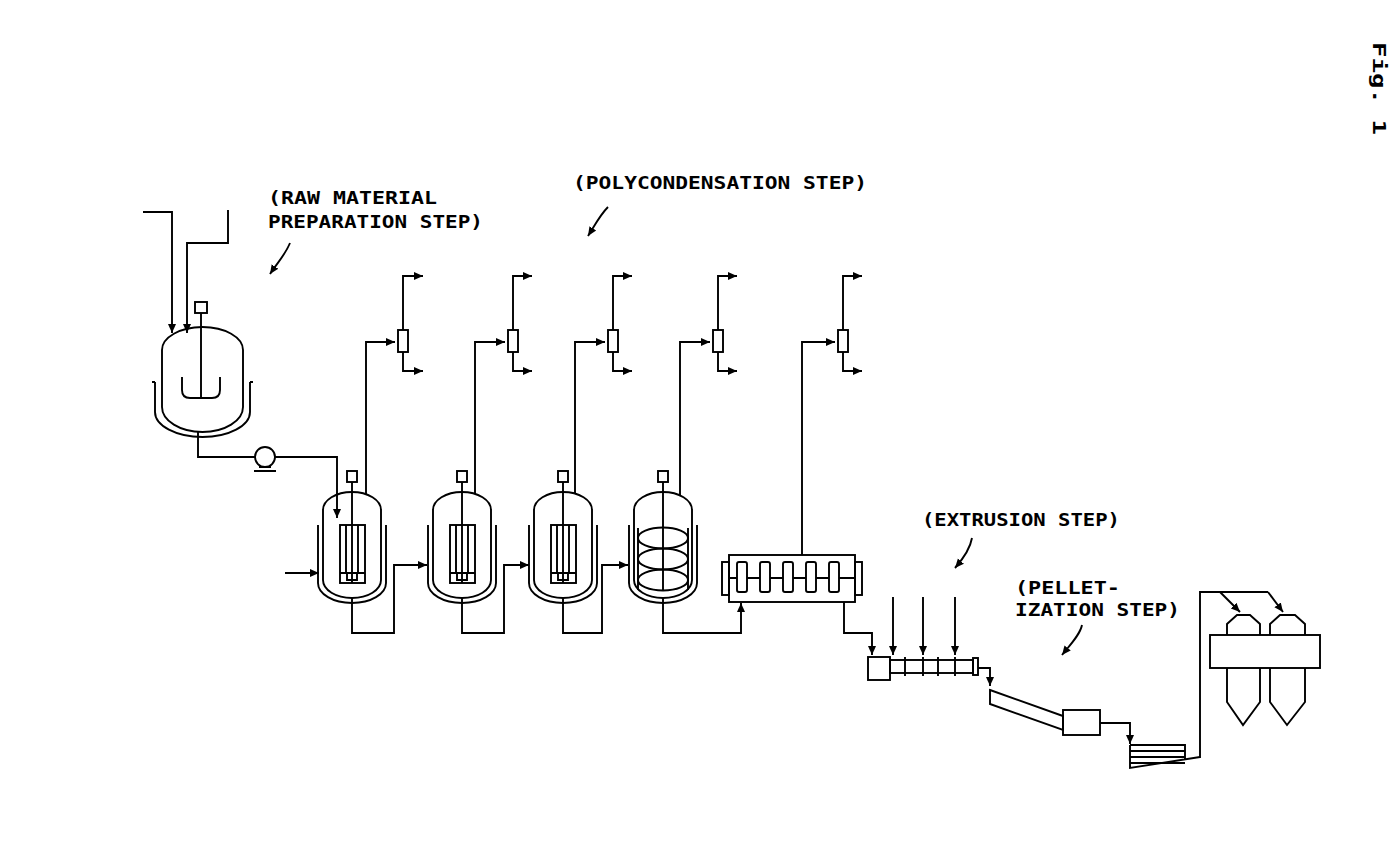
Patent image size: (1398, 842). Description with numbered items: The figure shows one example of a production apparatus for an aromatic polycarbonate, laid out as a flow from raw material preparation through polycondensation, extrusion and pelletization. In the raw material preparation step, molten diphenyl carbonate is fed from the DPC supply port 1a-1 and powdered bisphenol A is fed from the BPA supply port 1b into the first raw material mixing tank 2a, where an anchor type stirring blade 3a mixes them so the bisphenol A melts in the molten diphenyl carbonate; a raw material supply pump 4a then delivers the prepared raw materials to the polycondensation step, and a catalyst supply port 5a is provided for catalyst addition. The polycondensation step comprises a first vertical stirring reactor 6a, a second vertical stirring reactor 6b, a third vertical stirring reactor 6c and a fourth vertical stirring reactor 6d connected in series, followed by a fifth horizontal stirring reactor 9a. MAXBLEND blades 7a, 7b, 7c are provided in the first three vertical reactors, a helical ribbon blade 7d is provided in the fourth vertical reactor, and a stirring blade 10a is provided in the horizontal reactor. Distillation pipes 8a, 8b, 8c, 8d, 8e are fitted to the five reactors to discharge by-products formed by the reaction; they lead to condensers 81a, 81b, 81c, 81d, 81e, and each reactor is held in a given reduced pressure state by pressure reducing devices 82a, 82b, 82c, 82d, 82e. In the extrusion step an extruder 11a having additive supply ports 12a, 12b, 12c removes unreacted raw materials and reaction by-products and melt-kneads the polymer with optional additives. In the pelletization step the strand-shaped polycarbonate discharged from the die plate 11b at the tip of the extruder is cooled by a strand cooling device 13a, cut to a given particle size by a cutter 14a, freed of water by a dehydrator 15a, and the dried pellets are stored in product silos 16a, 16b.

The DPC supply port 1a-1 is at (135, 264).
The BPA supply port 1b is at (215, 259).
The first raw material mixing tank 2a is at (183, 432).
The anchor type stirring blade 3a is at (185, 380).
The raw material supply pump 4a is at (268, 448).
The catalyst supply port 5a is at (287, 574).
The first vertical stirring reactor 6a is at (335, 600).
The second vertical stirring reactor 6b is at (453, 600).
The third vertical stirring reactor 6c is at (558, 603).
The fourth vertical stirring reactor 6d is at (656, 603).
The MAXBLEND blade 7a is at (340, 533).
The MAXBLEND blade 7b is at (453, 527).
The MAXBLEND blade 7c is at (558, 524).
The helical ribbon blade 7d is at (657, 522).
The distillation pipe 8a is at (366, 410).
The distillation pipe 8b is at (475, 410).
The distillation pipe 8c is at (575, 410).
The distillation pipe 8d is at (680, 410).
The distillation pipe 8e is at (802, 414).
The condenser 81a is at (408, 341).
The condenser 81b is at (518, 341).
The condenser 81c is at (618, 341).
The condenser 81d is at (723, 341).
The condenser 81e is at (848, 341).
The pressure reducing device 82a is at (431, 297).
The pressure reducing device 82b is at (541, 297).
The pressure reducing device 82c is at (641, 297).
The pressure reducing device 82d is at (746, 297).
The pressure reducing device 82e is at (871, 297).
The fifth horizontal stirring reactor 9a is at (825, 602).
The stirring blade 10a is at (778, 573).
The extruder 11a is at (895, 682).
The die plate 11b is at (975, 682).
The additive supply port 12a is at (888, 614).
The additive supply port 12b is at (926, 614).
The additive supply port 12c is at (967, 614).
The strand cooling device 13a is at (1000, 712).
The cutter 14a is at (1076, 710).
The dehydrator 15a is at (1150, 765).
The product silo 16a is at (1243, 725).
The product silo 16b is at (1288, 725).